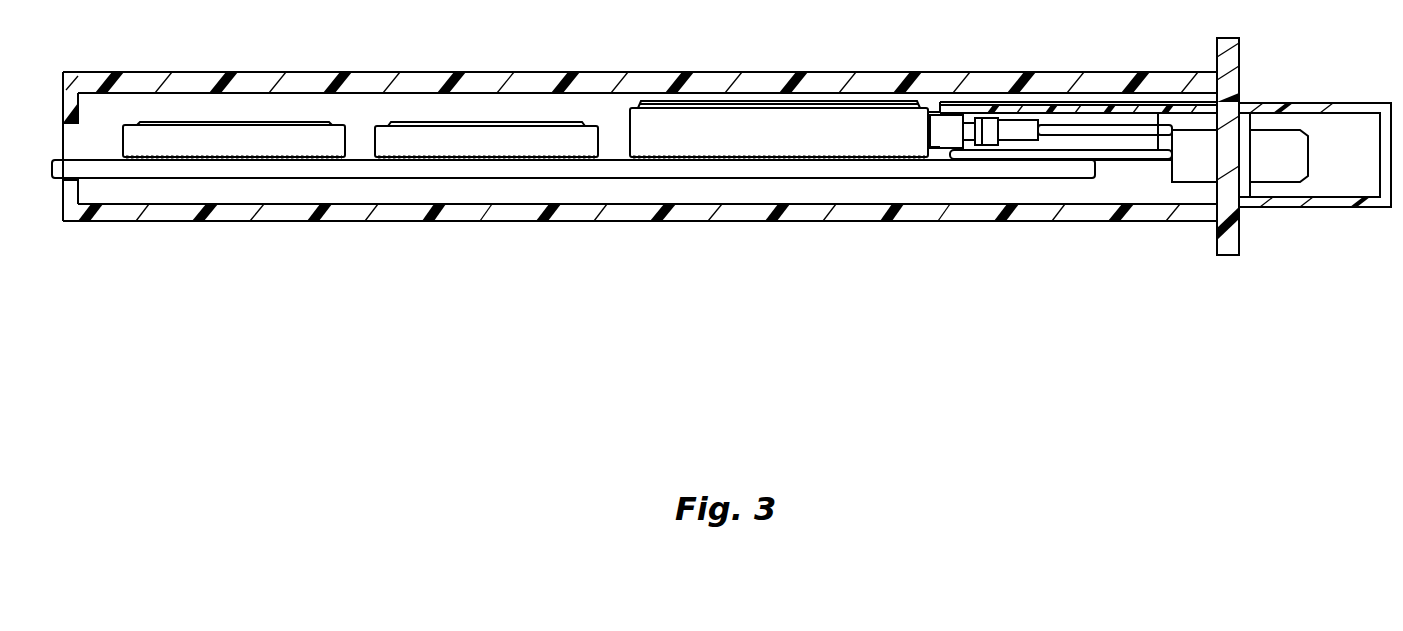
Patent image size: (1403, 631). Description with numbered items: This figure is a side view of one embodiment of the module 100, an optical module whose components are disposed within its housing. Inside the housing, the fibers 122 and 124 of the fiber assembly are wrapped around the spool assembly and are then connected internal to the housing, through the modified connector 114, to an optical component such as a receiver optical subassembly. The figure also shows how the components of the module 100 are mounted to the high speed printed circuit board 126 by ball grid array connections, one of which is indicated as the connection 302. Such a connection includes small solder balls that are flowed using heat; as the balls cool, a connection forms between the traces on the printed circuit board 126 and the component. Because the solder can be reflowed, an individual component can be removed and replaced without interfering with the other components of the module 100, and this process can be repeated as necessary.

The module 100 is at (858, 370).
The modified connector 114 is at (988, 138).
The fiber 122 is at (1093, 130).
The fiber 124 is at (1038, 130).
The printed circuit board 126 is at (385, 178).
The connection 302 is at (624, 154).